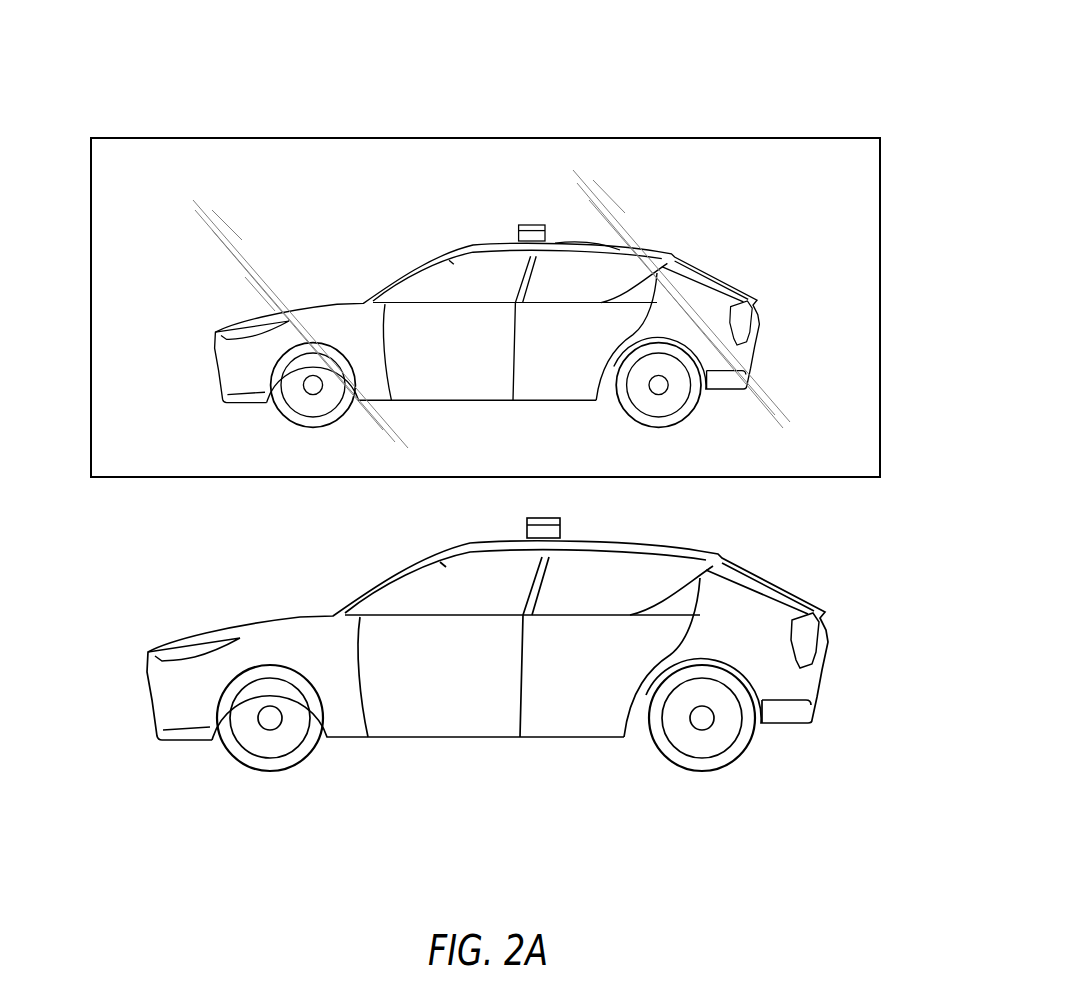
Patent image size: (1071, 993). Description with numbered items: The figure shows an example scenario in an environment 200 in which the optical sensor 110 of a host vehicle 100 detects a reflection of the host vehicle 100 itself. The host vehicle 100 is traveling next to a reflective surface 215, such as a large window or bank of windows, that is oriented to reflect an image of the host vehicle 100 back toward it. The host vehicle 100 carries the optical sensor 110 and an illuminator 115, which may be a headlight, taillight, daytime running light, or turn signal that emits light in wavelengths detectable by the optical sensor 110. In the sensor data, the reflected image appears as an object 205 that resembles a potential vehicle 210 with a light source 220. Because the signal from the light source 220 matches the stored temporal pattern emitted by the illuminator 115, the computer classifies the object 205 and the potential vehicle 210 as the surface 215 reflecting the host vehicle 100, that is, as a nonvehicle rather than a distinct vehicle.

The host vehicle 100 is at (499, 660).
The optical sensor 110 is at (560, 528).
The illuminator 115 is at (190, 650).
The environment 200 is at (490, 245).
The object 205 is at (557, 238).
The potential vehicle 210 is at (575, 238).
The reflective surface 215 is at (880, 172).
The light source 220 is at (232, 333).